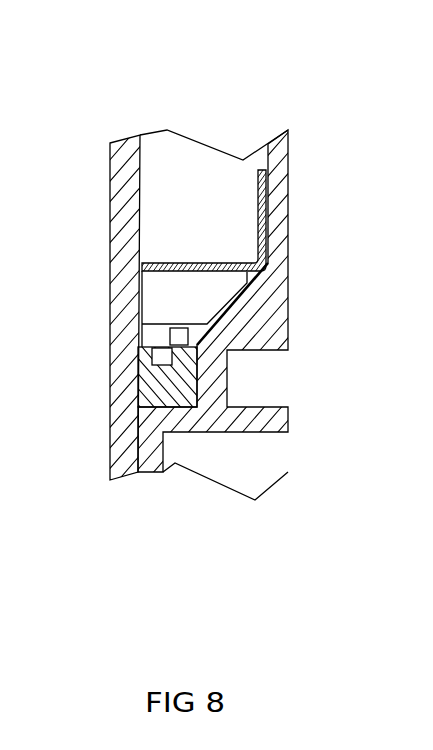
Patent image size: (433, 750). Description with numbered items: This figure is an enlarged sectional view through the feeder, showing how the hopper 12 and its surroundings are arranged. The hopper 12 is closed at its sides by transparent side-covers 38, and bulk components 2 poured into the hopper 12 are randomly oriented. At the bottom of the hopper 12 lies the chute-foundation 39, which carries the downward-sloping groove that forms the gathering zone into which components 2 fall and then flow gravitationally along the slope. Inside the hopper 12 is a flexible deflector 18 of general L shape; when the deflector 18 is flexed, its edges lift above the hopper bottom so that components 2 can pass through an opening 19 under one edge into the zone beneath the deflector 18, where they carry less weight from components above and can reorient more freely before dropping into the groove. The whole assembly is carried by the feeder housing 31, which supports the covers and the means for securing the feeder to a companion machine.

The side-covers for hopper 38 is at (118, 175).
The hopper 12 is at (226, 188).
The deflector 18 is at (220, 262).
The opening under edge of deflector 19 is at (162, 330).
The component 2 is at (152, 352).
The chute-foundation 39 is at (145, 392).
The housing for feeder 31 is at (205, 463).